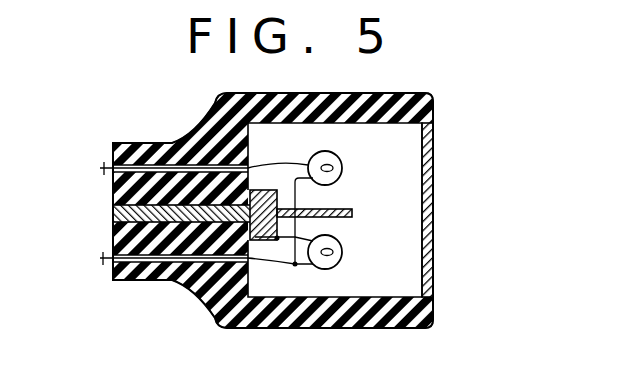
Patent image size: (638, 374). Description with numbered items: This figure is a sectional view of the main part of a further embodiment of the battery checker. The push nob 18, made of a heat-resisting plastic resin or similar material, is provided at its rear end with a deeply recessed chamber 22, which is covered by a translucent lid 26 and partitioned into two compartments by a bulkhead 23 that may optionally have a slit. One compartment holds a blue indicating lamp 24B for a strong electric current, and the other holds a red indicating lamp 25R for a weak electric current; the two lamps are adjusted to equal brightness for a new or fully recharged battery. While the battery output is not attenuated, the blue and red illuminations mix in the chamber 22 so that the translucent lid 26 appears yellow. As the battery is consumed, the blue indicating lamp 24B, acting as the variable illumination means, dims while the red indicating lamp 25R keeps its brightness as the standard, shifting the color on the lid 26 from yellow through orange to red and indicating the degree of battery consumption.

The push nob 18 is at (401, 328).
The recessed chamber 22 is at (412, 258).
The bulkhead 23 is at (352, 217).
The blue indicating lamp 24B is at (340, 263).
The red indicating lamp 25R is at (340, 158).
The translucent lid 26 is at (429, 160).